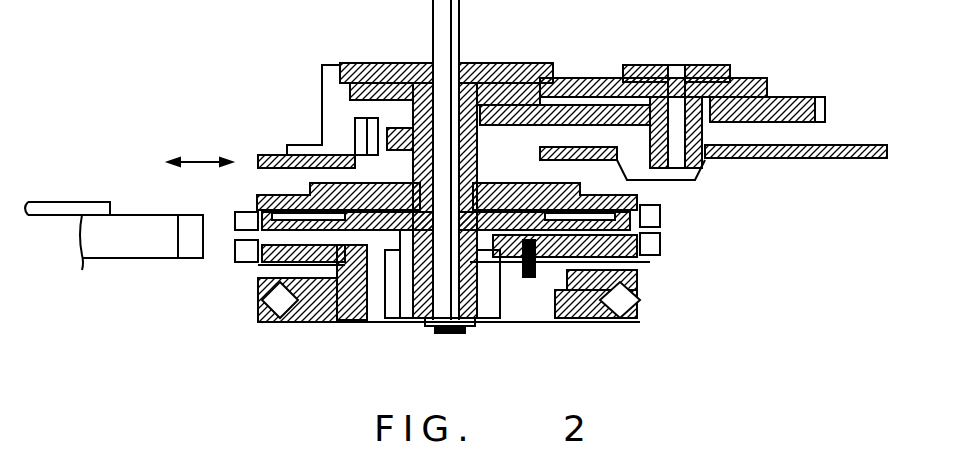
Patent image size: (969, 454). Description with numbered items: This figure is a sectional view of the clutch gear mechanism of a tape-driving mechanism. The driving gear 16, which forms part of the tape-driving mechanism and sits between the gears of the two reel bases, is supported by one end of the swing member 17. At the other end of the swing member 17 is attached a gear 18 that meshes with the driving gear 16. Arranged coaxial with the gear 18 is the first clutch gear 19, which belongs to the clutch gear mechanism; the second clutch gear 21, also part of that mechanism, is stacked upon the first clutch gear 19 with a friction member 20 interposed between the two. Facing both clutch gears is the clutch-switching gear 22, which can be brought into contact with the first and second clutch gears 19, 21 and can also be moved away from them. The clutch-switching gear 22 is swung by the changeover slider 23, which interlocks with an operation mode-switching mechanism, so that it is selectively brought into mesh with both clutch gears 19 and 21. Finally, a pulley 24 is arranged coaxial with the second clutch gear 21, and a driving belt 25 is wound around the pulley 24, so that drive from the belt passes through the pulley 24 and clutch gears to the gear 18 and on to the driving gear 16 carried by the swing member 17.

The driving gear 16 is at (824, 110).
The swing member 17 is at (584, 78).
The gear 18 is at (352, 130).
The first clutch gear 19 is at (660, 212).
The friction member 20 is at (630, 228).
The second clutch gear 21 is at (664, 250).
The clutch-switching gear 22 is at (146, 213).
The changeover slider 23 is at (57, 202).
The pulley 24 is at (272, 325).
The driving belt 25 is at (262, 292).